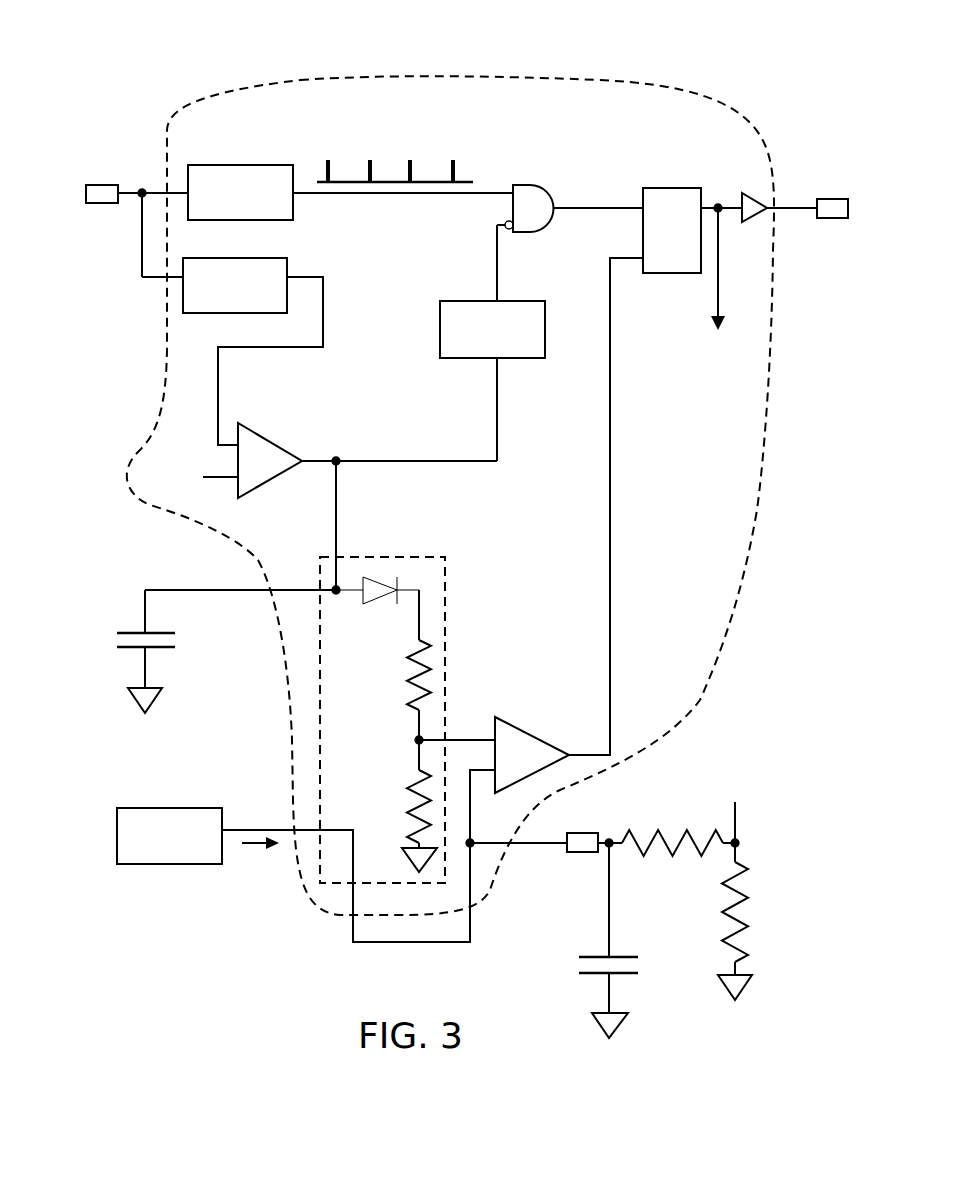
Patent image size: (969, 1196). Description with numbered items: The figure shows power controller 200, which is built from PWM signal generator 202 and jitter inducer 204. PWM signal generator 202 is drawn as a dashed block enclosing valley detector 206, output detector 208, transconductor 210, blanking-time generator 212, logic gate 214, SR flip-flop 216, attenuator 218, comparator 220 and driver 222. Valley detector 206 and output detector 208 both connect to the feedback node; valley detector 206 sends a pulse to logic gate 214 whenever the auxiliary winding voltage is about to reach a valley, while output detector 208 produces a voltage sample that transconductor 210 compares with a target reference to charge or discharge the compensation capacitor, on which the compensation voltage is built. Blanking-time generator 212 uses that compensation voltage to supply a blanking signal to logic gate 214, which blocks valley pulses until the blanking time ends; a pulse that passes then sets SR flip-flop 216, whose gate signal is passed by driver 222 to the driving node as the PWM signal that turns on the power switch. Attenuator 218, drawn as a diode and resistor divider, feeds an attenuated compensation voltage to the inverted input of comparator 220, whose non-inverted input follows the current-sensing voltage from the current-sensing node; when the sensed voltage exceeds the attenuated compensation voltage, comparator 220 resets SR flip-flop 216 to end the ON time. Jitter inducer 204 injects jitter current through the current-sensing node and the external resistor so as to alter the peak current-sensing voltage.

The power controller 200 is at (501, 62).
The PWM signal generator 202 is at (301, 79).
The jitter inducer 204 is at (208, 848).
The valley detector 206 is at (283, 214).
The output detector 208 is at (283, 290).
The transconductor 210 is at (253, 430).
The blanking-time generator 212 is at (539, 343).
The logic gate 214 is at (540, 185).
The SR flip-flop 216 is at (697, 245).
The attenuator 218 is at (430, 557).
The comparator 220 is at (515, 722).
The driver 222 is at (752, 190).